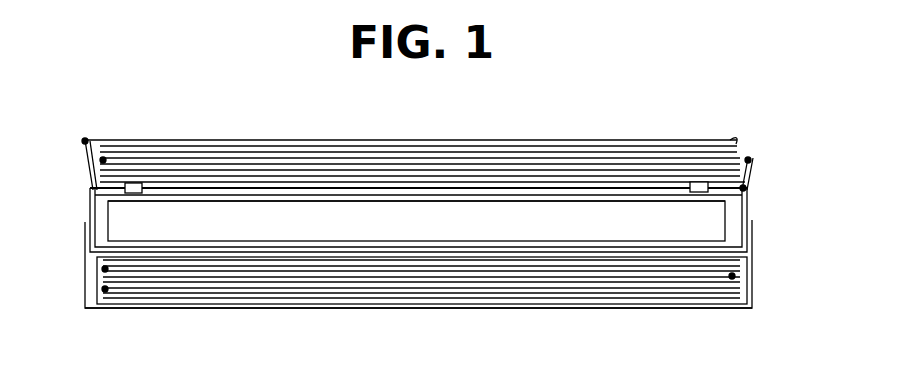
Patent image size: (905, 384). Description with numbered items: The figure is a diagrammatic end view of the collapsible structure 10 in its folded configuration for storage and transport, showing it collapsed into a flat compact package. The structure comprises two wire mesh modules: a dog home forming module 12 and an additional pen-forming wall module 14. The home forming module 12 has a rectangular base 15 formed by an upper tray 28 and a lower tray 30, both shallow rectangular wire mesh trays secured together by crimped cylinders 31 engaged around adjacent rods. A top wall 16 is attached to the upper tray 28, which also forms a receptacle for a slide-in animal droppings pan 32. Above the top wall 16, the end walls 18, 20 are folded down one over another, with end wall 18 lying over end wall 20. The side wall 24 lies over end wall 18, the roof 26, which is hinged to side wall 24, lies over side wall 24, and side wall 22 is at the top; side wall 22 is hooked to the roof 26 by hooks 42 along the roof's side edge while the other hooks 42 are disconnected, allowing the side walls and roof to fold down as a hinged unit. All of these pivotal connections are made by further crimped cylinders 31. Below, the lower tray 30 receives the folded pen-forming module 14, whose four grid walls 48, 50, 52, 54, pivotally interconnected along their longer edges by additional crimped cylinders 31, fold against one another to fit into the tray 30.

The collapsible structure 10 is at (167, 133).
The dog home forming module 12 is at (86, 189).
The pen-forming wall module 14 is at (96, 274).
The rectangular base 15 is at (752, 248).
The top wall 16 is at (573, 193).
The end wall 18 is at (645, 172).
The end wall 20 is at (675, 185).
The side wall 22 is at (537, 138).
The side wall 24 is at (608, 163).
The roof 26 is at (572, 152).
The upper tray 28 is at (88, 209).
The lower tray 30 is at (85, 296).
The crimped cylinders 31 is at (86, 153).
The animal droppings pan 32 is at (391, 212).
The hooks 42 is at (742, 140).
The wall 48 is at (392, 297).
The wall 50 is at (433, 283).
The wall 52 is at (500, 270).
The wall 54 is at (540, 260).